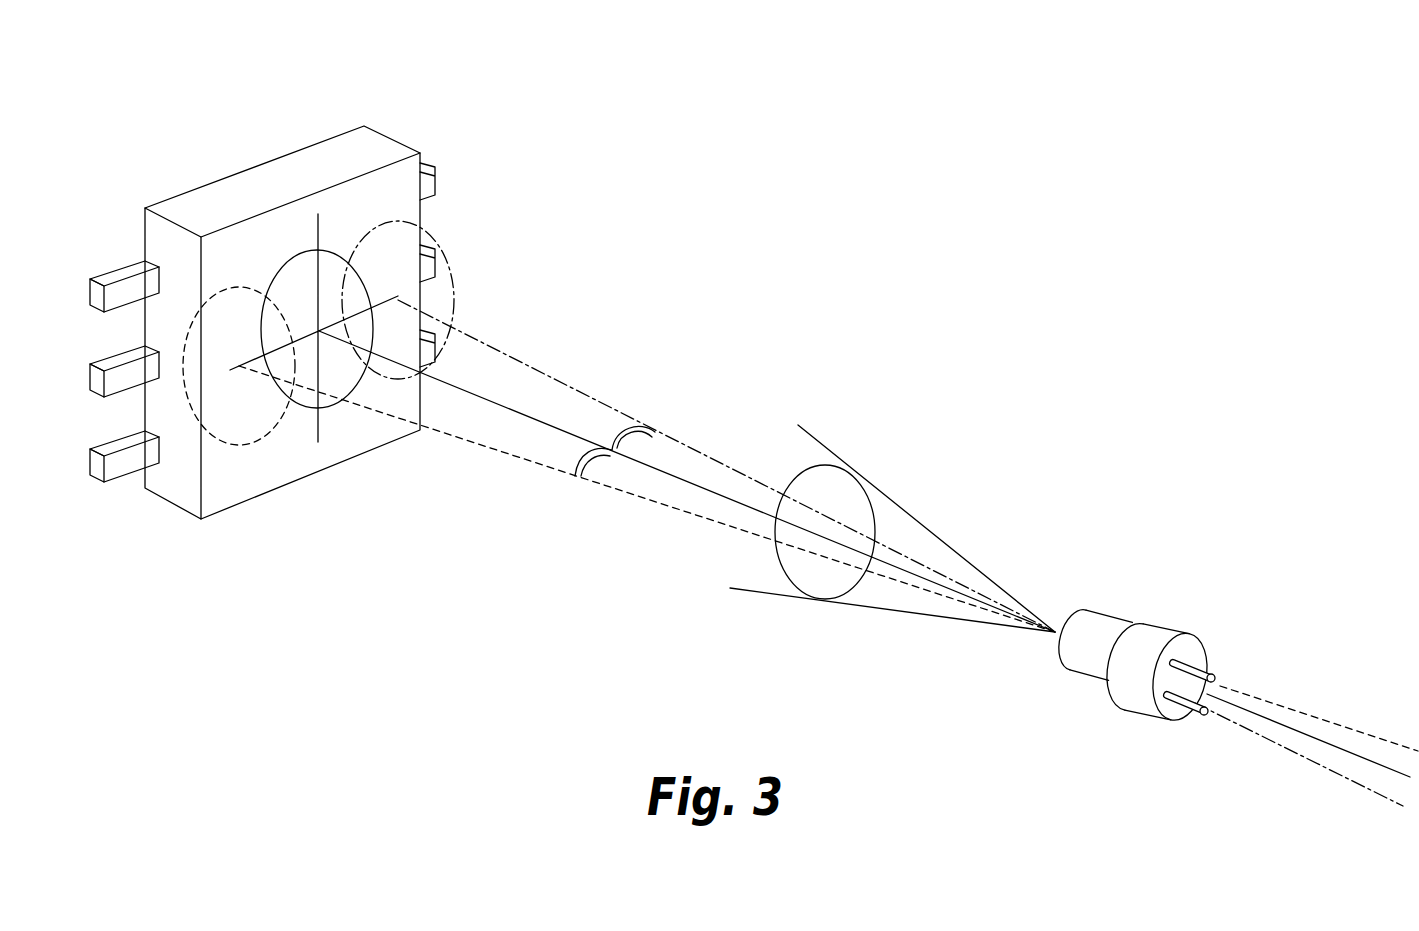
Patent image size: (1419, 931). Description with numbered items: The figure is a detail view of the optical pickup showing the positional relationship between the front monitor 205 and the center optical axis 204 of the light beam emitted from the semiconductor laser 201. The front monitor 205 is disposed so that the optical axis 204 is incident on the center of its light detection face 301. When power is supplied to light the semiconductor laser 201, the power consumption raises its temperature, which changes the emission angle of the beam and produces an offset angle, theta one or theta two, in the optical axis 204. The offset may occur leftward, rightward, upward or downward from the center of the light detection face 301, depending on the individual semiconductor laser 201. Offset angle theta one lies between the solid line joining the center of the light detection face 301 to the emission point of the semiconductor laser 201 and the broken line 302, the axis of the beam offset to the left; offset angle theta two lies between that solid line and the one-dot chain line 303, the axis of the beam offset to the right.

The semiconductor laser 201 is at (1118, 693).
The center optical axis 204 is at (661, 468).
The front monitor 205 is at (382, 148).
The light detection face 301 is at (302, 292).
The broken line 302 is at (663, 505).
The one-dot chain line 303 is at (722, 463).